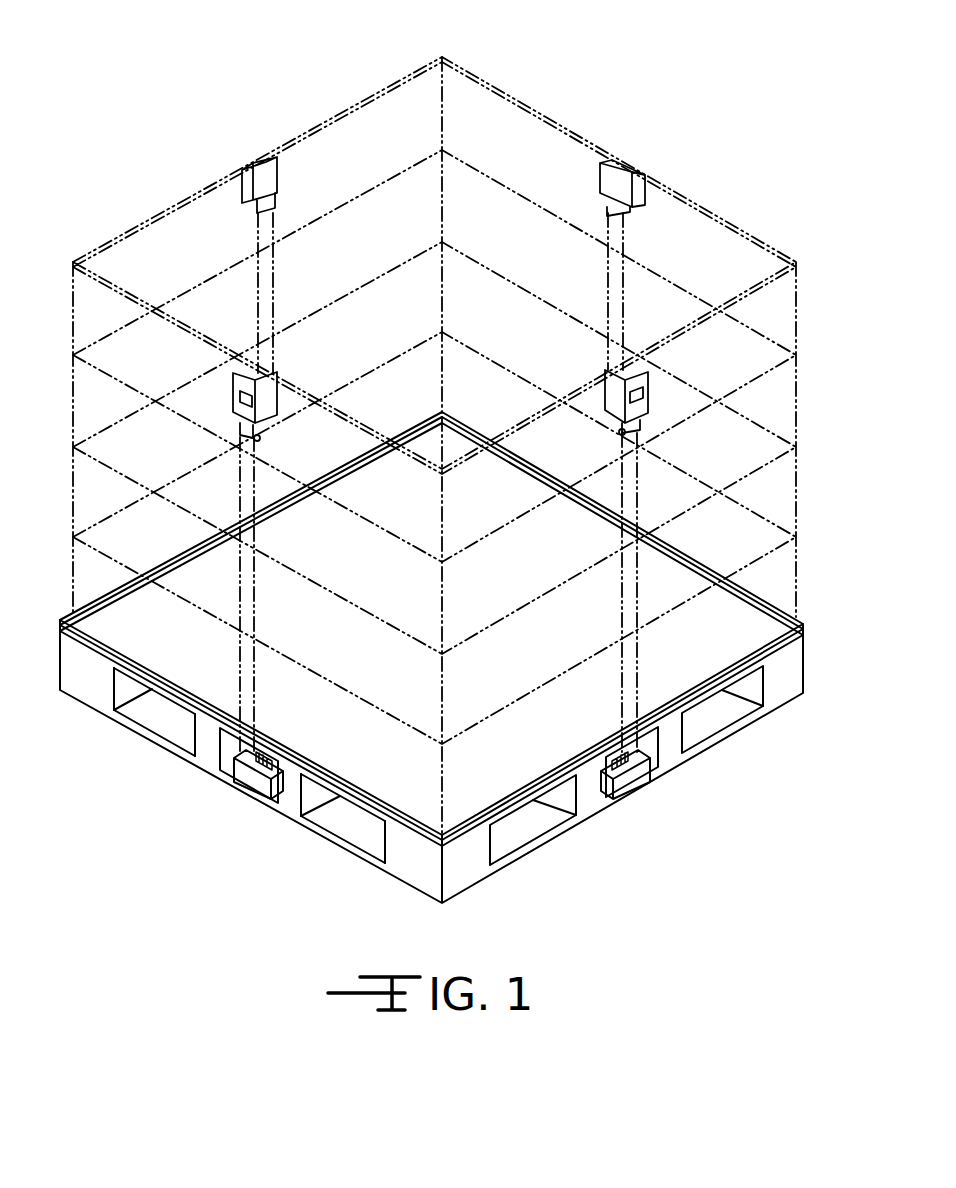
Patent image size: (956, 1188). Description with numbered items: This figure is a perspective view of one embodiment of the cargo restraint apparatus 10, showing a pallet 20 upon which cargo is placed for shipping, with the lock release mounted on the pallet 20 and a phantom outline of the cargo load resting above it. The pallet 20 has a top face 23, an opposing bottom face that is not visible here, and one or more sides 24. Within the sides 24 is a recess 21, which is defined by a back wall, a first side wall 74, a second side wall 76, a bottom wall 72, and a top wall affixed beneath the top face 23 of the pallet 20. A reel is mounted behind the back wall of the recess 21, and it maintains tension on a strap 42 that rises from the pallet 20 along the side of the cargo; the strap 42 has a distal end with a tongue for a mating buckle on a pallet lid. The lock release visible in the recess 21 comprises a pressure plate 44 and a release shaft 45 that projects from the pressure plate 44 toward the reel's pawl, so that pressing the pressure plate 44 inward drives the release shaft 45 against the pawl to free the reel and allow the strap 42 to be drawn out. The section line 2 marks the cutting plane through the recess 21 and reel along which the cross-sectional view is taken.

The cargo restraint apparatus 10 is at (205, 500).
The pallet 20 is at (150, 571).
The recess 21 is at (232, 797).
The top face 23 is at (668, 588).
The sides 24 is at (207, 750).
The strap 42 is at (242, 592).
The pressure plate 44 is at (253, 778).
The release shaft 45 is at (273, 772).
The bottom wall 72 is at (258, 790).
The first side wall 74 is at (233, 742).
The second side wall 76 is at (647, 743).
The section line 2- 2 is at (338, 670).